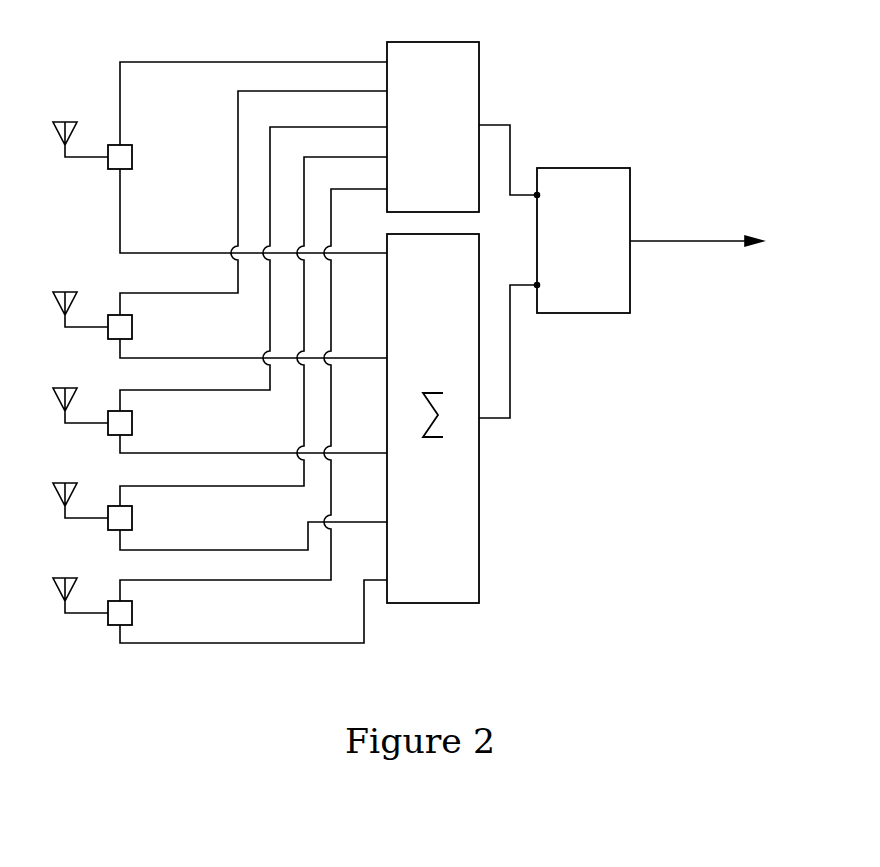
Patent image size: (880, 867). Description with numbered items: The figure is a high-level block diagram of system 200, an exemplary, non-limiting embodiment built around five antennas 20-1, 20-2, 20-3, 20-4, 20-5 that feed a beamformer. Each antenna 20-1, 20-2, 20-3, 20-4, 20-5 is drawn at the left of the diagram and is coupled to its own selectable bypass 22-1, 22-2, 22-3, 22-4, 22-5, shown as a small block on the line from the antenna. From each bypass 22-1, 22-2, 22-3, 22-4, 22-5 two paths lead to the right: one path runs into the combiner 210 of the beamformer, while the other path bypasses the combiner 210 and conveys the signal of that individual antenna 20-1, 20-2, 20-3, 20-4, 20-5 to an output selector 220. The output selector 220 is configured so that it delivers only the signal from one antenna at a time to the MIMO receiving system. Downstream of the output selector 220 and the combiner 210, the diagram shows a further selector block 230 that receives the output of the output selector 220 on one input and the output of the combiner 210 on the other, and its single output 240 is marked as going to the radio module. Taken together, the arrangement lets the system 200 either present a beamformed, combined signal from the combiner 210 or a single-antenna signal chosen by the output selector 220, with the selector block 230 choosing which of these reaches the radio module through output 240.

The system 200 is at (576, 585).
The antenna 20-1 is at (53, 122).
The antenna 20-2 is at (53, 292).
The antenna 20-3 is at (53, 388).
The antenna 20-4 is at (53, 483).
The antenna 20-5 is at (53, 578).
The selectable bypass 22-1 is at (132, 157).
The selectable bypass 22-2 is at (132, 327).
The selectable bypass 22-3 is at (132, 423).
The selectable bypass 22-4 is at (132, 518).
The selectable bypass 22-5 is at (132, 613).
The combiner 210 is at (479, 476).
The output selector 220 is at (479, 74).
The second selector 230 is at (611, 168).
The output to radio module 240 is at (763, 241).